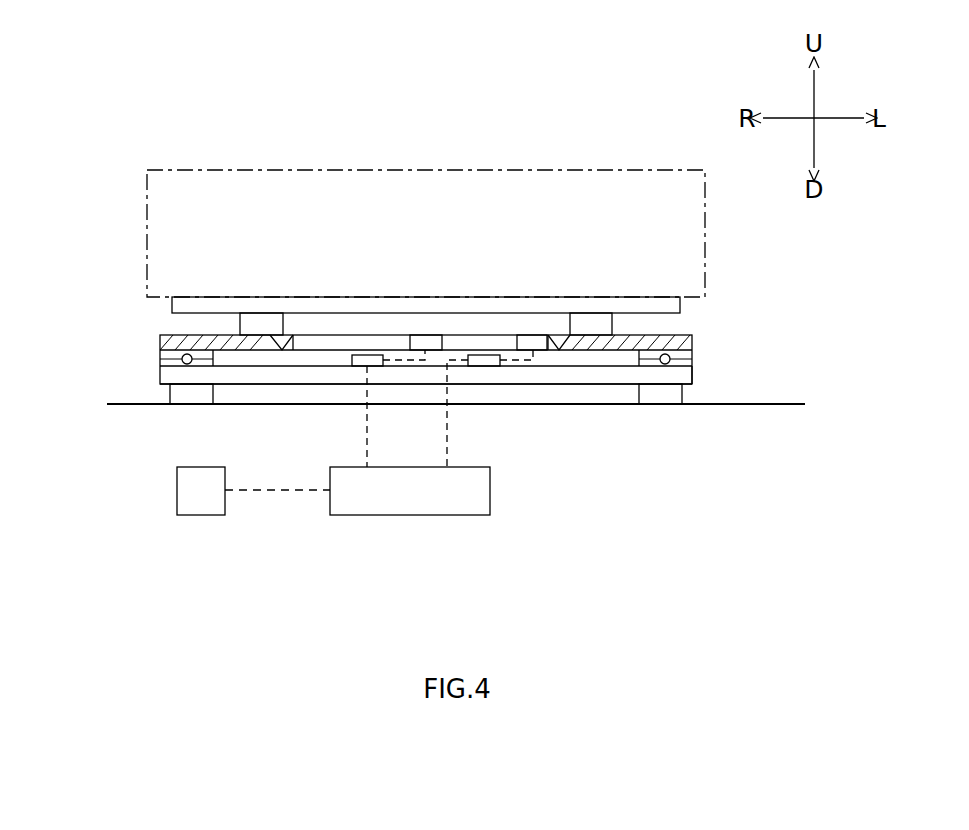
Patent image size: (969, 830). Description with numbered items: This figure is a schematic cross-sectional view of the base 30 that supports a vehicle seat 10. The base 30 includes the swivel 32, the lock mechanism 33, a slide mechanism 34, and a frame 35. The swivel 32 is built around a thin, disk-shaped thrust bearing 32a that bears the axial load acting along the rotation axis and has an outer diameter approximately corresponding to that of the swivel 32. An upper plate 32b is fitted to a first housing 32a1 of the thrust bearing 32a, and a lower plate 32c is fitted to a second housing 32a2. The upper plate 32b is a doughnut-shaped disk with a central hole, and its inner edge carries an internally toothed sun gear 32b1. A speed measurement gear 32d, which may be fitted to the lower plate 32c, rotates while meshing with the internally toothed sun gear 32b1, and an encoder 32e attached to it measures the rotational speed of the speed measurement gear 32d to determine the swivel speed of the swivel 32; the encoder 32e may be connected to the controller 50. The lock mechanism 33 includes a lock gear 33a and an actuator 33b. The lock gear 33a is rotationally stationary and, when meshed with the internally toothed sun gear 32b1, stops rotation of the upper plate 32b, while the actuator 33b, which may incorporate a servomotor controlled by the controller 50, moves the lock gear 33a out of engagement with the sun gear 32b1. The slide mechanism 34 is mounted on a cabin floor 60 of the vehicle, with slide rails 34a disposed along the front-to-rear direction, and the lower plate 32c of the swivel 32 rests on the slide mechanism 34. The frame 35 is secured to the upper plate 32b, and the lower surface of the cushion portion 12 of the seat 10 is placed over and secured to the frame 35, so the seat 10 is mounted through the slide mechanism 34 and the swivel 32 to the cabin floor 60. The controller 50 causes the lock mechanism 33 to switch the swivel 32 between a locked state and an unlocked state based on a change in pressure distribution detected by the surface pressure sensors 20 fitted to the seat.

The seat 10 is at (636, 65).
The cushion portion 12 is at (187, 165).
The surface pressure sensors 20 is at (177, 490).
The base 30 is at (819, 290).
The swivel 32 is at (150, 360).
The thrust bearing 32a is at (706, 360).
The first housing 32a1 is at (687, 334).
The second housing 32a2 is at (695, 375).
The upper plate 32b is at (693, 347).
The internally toothed sun gear 32b1 is at (296, 352).
The lower plate 32c is at (693, 372).
The speed measurement gear 32d is at (537, 334).
The encoder 32e is at (485, 354).
The lock mechanism 33 is at (383, 373).
The lock gear 33a is at (427, 333).
The actuator 33b is at (364, 354).
The slide mechanism 34 is at (152, 397).
The slide rails 34a is at (213, 404).
The frame 35 is at (154, 322).
The controller 50 is at (490, 497).
The cabin floor 60 is at (785, 403).